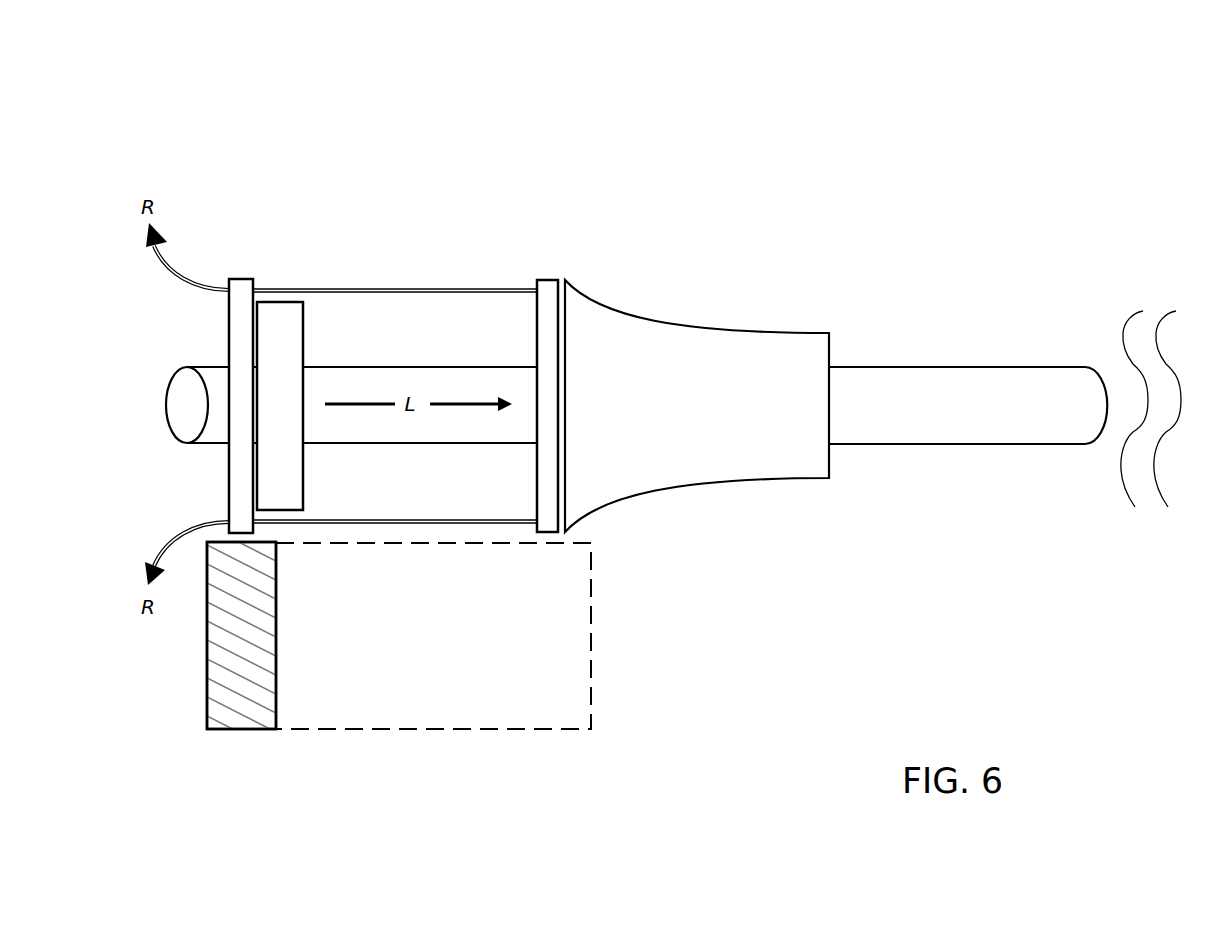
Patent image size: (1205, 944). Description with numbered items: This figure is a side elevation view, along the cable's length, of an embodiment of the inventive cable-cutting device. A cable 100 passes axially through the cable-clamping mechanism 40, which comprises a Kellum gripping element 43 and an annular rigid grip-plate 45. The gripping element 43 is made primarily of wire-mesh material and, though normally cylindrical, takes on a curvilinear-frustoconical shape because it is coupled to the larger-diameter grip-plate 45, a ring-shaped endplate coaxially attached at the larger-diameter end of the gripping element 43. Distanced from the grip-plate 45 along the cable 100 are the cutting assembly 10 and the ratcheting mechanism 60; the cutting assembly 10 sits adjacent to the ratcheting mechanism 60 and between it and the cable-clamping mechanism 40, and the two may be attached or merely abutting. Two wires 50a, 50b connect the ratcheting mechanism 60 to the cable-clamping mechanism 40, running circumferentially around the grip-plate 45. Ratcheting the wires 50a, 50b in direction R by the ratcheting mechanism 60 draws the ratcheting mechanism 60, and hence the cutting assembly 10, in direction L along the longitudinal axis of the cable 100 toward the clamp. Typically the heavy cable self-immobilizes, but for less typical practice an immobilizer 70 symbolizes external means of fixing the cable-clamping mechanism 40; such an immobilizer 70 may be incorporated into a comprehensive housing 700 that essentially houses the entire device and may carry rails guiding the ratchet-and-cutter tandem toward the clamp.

The cutting assembly 10 is at (283, 322).
The cable-clamping mechanism 40 is at (683, 284).
The gripping element 43 is at (697, 389).
The grip-plate 45 is at (548, 290).
The wire 50a is at (373, 290).
The wire 50b is at (373, 520).
The ratcheting mechanism 60 is at (243, 290).
The immobilizer 70 is at (242, 673).
The cable 100 is at (186, 401).
The comprehensive housing 700 is at (427, 697).